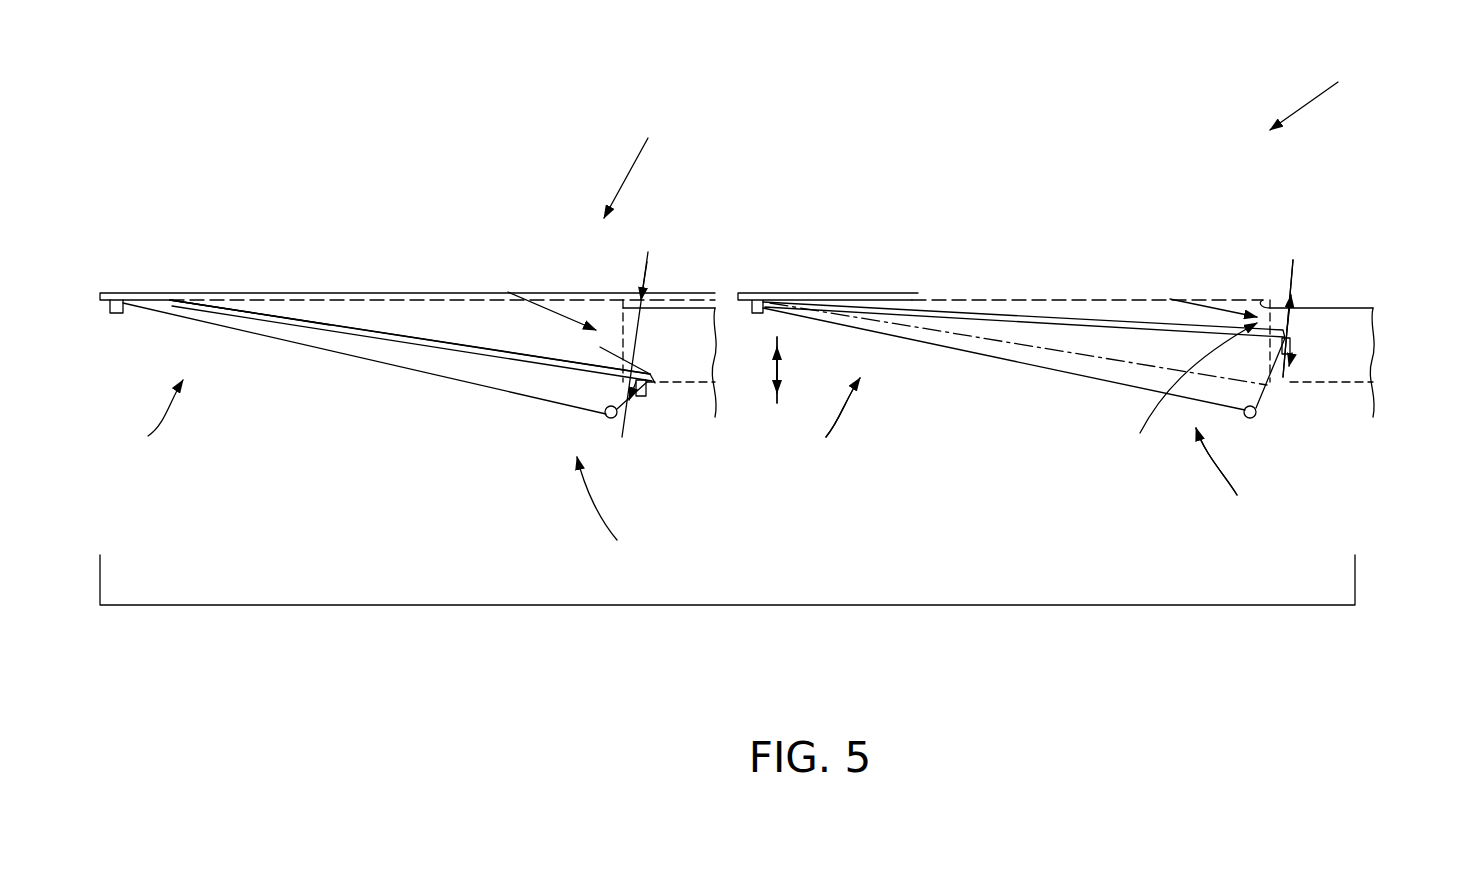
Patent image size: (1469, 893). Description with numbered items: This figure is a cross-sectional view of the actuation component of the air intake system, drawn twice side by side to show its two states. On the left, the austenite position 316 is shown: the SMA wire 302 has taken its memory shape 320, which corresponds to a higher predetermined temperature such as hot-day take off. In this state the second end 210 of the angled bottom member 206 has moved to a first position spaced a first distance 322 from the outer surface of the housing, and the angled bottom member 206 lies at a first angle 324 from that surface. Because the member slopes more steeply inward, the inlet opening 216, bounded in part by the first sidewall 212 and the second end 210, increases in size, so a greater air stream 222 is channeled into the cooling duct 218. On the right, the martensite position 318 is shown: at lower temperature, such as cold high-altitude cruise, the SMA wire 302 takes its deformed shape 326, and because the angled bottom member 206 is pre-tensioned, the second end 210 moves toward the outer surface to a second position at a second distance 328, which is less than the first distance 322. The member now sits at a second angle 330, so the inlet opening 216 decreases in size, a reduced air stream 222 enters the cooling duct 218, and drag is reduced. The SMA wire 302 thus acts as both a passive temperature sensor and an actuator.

The angled bottom member 206 is at (494, 348).
The second end 210 is at (658, 384).
The first sidewall 212 is at (455, 333).
The inlet opening 216 is at (603, 345).
The cooling duct 218 is at (698, 340).
The air stream 222 is at (553, 300).
The SMA wire 302 is at (424, 376).
The austenite position 316 is at (139, 418).
The martensite position 318 is at (843, 407).
The memory shape 320 is at (613, 512).
The first distance 322 is at (633, 337).
The first angle 324 is at (372, 327).
The deformed shape 326 is at (1216, 461).
The second distance 328 is at (1288, 318).
The second angle 330 is at (1028, 307).